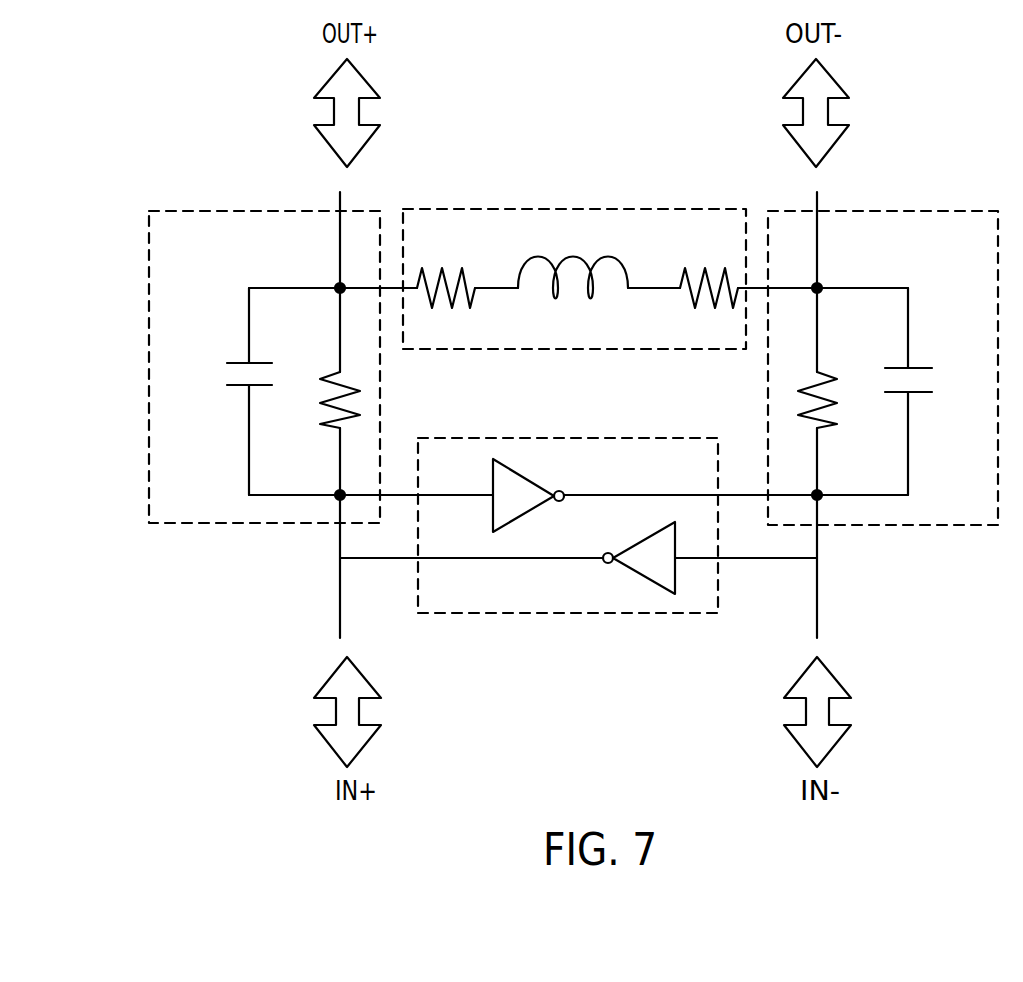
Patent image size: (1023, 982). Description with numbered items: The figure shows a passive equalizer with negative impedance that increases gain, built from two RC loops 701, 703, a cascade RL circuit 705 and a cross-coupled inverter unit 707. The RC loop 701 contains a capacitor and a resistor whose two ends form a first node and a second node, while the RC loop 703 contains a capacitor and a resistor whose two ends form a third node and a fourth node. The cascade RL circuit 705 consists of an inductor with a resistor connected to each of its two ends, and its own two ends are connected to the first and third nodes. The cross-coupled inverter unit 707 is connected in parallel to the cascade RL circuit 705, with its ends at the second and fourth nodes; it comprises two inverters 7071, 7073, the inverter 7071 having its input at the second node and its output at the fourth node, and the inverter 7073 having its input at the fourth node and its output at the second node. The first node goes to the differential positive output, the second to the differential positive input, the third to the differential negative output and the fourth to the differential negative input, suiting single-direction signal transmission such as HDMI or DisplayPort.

The RC loop 701 is at (200, 523).
The RC loop 703 is at (950, 525).
The cascade RL circuit 705 is at (478, 209).
The cross-coupled inverter unit 707 is at (568, 554).
The inverter 7071 is at (540, 494).
The inverter 7073 is at (623, 556).